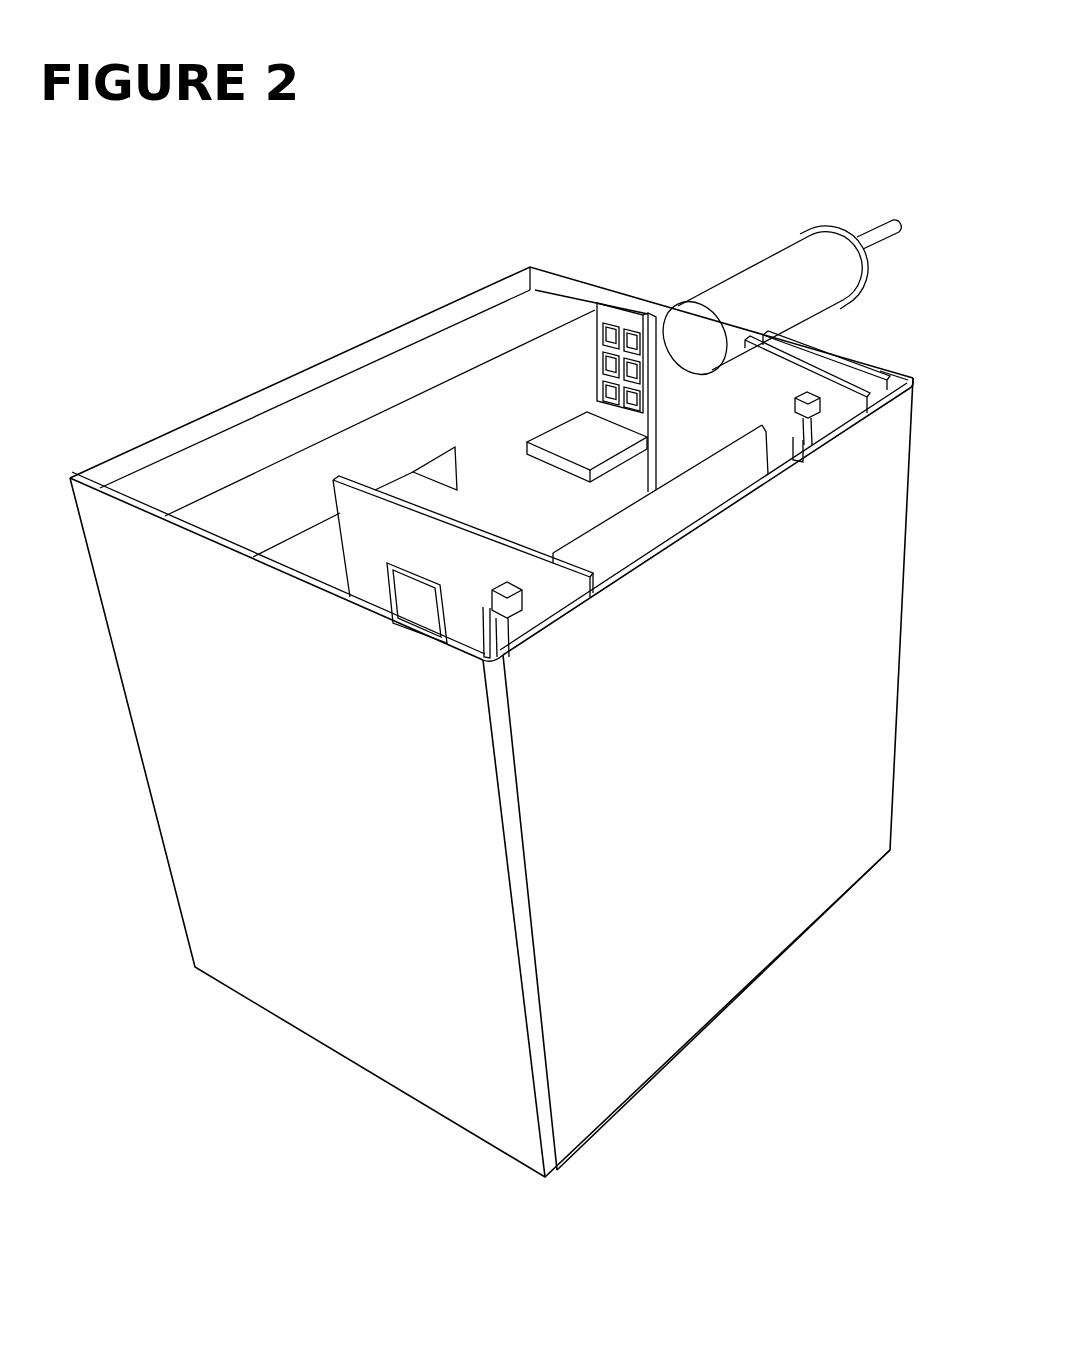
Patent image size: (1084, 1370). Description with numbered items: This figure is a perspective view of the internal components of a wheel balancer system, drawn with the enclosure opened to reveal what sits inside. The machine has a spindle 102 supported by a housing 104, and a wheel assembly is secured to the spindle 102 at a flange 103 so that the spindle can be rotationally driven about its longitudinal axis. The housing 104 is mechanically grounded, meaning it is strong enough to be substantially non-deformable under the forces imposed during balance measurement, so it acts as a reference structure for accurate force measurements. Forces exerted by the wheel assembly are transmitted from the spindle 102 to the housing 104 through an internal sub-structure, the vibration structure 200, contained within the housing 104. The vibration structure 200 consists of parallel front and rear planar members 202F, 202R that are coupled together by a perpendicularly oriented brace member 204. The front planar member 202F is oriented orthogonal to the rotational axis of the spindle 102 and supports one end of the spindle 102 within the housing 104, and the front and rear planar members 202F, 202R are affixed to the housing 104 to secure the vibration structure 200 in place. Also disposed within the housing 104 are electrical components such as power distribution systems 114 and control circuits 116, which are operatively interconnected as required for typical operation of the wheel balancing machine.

The housing 104 is at (491, 722).
The power distribution systems 114 is at (380, 405).
The vibration structure 200 is at (368, 412).
The control circuits 116 is at (560, 330).
The spindle 102 is at (714, 287).
The flange 103 is at (773, 214).
The front planar member 202F is at (850, 382).
The brace member 204 is at (692, 514).
The rear planar member 202R is at (388, 586).